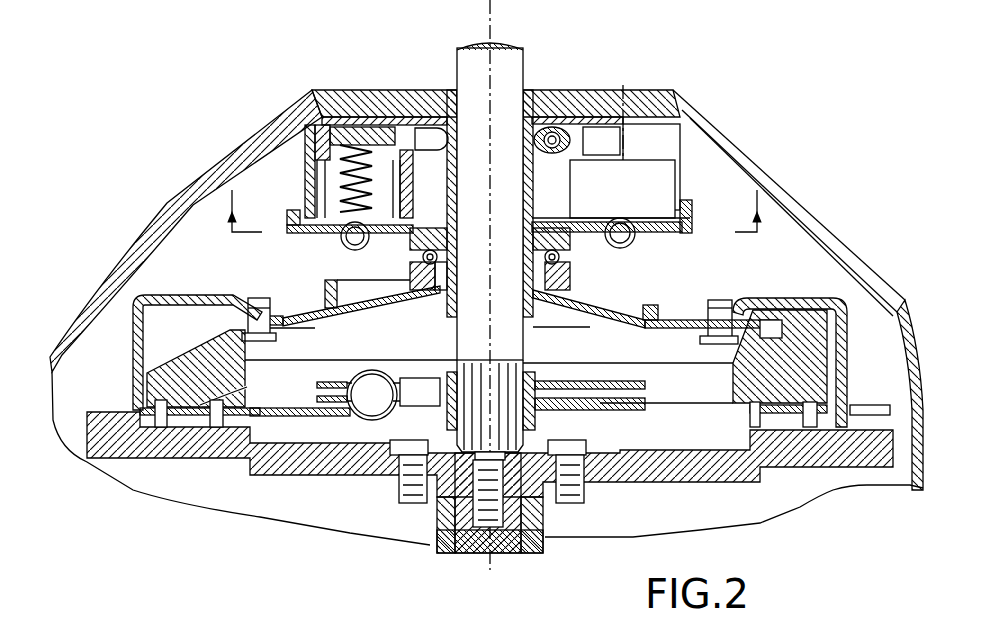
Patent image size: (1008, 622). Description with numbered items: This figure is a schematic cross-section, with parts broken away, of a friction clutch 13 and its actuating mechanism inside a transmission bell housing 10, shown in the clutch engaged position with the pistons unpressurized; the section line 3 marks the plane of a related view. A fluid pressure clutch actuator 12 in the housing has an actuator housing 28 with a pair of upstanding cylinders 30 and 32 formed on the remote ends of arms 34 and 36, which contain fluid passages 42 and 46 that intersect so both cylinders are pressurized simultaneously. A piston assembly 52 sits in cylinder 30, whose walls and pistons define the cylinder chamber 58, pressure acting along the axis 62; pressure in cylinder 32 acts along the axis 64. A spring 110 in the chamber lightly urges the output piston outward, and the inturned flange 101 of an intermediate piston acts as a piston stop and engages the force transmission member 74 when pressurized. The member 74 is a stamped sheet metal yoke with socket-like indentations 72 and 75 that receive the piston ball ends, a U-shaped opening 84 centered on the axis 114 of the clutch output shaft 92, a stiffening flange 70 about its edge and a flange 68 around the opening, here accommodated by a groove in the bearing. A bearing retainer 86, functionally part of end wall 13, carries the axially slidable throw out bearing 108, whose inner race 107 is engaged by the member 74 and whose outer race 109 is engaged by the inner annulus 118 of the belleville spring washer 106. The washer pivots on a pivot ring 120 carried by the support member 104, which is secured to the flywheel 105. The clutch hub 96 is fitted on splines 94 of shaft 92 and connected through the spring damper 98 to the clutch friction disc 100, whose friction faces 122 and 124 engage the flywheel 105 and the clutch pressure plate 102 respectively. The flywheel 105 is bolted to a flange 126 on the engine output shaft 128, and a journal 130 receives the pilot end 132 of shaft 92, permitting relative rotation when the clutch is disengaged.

The section line 3— 3 is at (496, 221).
The transmission bell housing 10 is at (160, 205).
The fluid pressure clutch actuator 12 is at (685, 135).
The friction clutch 13 is at (327, 97).
The actuator housing 28 is at (578, 115).
The cylinder 30 is at (300, 148).
The cylinder 32 is at (675, 115).
The arm 34 is at (420, 117).
The arm 36 is at (585, 140).
The fluid passage 42 is at (458, 107).
The fluid passage 46 is at (550, 127).
The piston assembly 52 is at (310, 190).
The cylinder chamber 58 is at (330, 121).
The axis 62 is at (353, 107).
The axis 64 is at (652, 90).
The stiffening flange 68 is at (548, 214).
The stiffening flange 70 is at (697, 205).
The socket-like indentation 72 is at (345, 233).
The force transmission member 74 is at (757, 178).
The socket-like indentation 75 is at (640, 240).
The U-shaped opening 84 is at (450, 226).
The bearing retainer 86 is at (420, 257).
The clutch output shaft 92 is at (470, 77).
The splines 94 is at (508, 383).
The clutch hub 96 is at (466, 388).
The spring damper 98 is at (362, 418).
The clutch friction disc 100 is at (295, 450).
The inturned flange 101 is at (660, 225).
The clutch pressure plate 102 is at (185, 355).
The clutch housing and belleville spring washer support member 104 is at (136, 300).
The flywheel 105 is at (153, 462).
The belleville spring washer 106 is at (308, 318).
The inner race 107 is at (563, 245).
The throw out bearing 108 is at (408, 263).
The outer race 109 is at (650, 350).
The spring 110 is at (332, 135).
The axis 114 is at (470, 34).
The inner annulus 118 is at (432, 296).
The pivot ring 120 is at (278, 322).
The friction face 122 is at (173, 437).
The friction face 124 is at (330, 389).
The flange 126 is at (587, 483).
The engine output shaft 128 is at (440, 512).
The journal 130 is at (468, 557).
The pilot end 132 is at (532, 547).